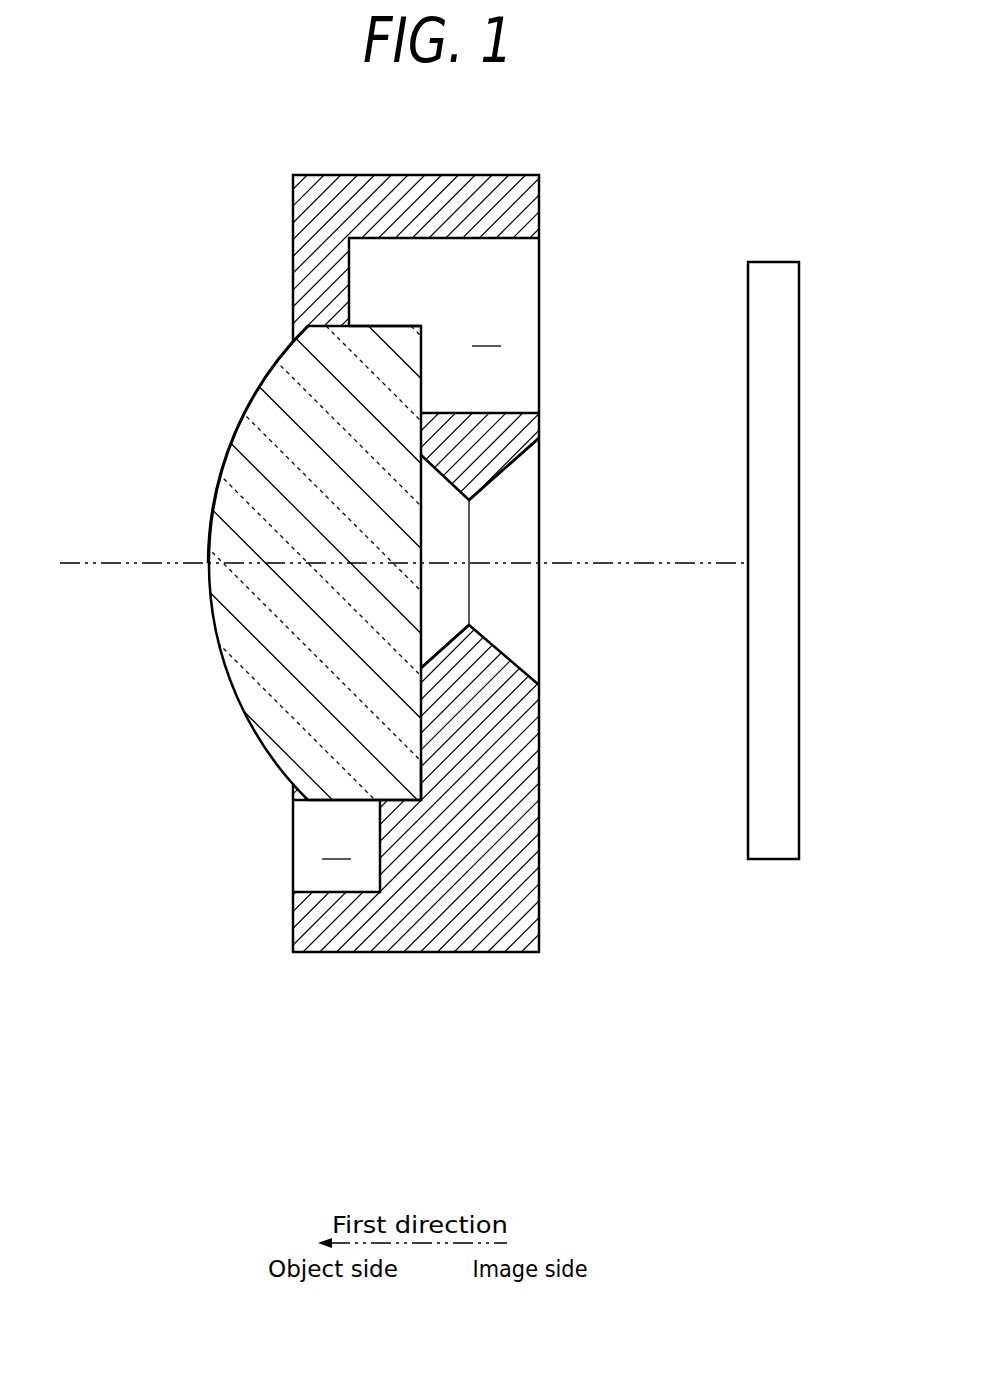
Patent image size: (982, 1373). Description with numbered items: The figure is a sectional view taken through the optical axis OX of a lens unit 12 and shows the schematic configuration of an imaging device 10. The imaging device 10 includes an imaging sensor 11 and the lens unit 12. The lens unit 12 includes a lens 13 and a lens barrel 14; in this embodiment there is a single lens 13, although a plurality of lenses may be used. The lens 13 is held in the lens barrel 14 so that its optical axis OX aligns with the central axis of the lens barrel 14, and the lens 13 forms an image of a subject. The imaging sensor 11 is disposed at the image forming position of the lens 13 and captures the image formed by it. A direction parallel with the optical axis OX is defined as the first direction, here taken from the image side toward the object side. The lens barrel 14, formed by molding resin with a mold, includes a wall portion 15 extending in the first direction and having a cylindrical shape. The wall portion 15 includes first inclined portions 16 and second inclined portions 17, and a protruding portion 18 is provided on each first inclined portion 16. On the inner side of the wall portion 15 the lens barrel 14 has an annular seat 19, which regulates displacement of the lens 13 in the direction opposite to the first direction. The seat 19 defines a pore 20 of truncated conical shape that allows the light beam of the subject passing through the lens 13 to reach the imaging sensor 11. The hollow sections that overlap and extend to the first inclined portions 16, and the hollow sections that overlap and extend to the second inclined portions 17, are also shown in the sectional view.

The imaging device 10 is at (550, 1128).
The imaging sensor 11 is at (772, 860).
The lens unit 12 is at (242, 1090).
The lens 13 is at (270, 752).
The lens barrel 14 is at (491, 585).
The wall portion 15 is at (382, 197).
The first inclined portion 16 is at (337, 326).
The second inclined portion 17 is at (398, 800).
The protruding portion 18 is at (293, 331).
The seat 19 is at (430, 438).
The pore 20 is at (498, 480).
The optical axis OX is at (120, 562).